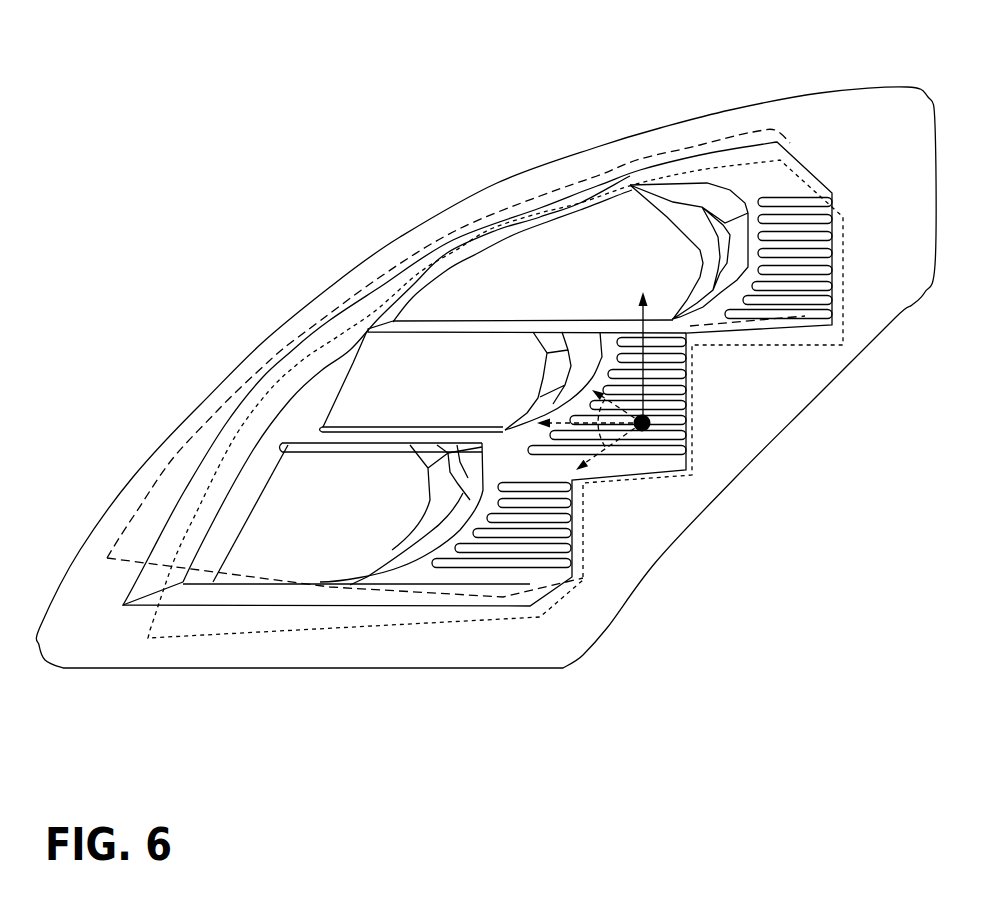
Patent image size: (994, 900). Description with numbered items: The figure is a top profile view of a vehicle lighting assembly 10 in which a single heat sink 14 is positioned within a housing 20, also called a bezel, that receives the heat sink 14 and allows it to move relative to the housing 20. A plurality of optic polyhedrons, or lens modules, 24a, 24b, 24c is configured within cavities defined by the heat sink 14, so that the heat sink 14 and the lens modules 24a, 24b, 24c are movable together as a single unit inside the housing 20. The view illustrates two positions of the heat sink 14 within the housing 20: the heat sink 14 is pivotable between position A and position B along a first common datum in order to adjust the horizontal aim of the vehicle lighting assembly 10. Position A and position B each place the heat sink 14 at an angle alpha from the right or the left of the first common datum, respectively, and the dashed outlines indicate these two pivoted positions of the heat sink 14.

The vehicle lighting assembly 10 is at (300, 248).
The heat sink 14 is at (783, 177).
The housing 20 is at (893, 280).
The first lens module 24a is at (543, 248).
The second lens module 24b is at (387, 387).
The third lens module 24c is at (273, 532).
The position A is at (125, 530).
The position B is at (195, 637).